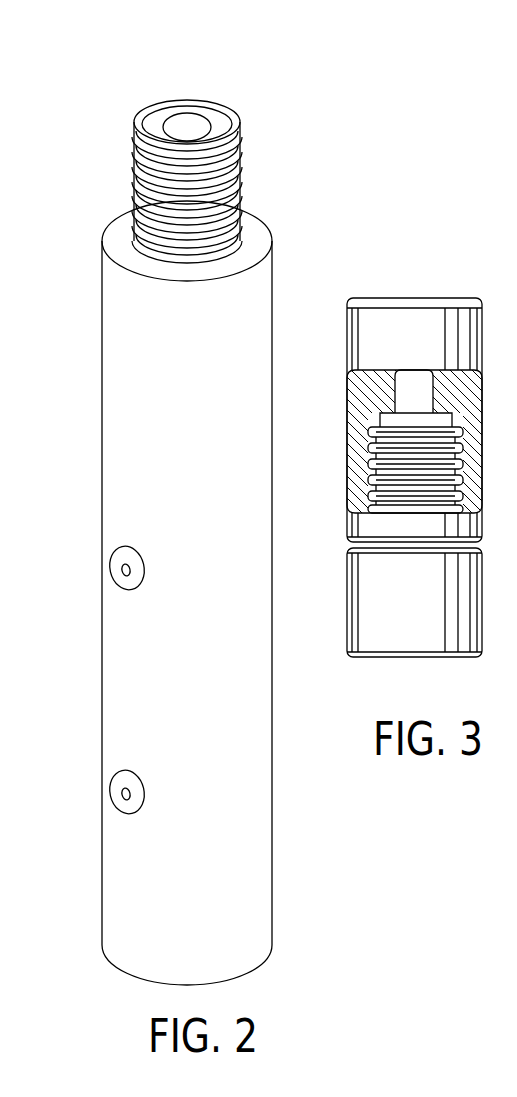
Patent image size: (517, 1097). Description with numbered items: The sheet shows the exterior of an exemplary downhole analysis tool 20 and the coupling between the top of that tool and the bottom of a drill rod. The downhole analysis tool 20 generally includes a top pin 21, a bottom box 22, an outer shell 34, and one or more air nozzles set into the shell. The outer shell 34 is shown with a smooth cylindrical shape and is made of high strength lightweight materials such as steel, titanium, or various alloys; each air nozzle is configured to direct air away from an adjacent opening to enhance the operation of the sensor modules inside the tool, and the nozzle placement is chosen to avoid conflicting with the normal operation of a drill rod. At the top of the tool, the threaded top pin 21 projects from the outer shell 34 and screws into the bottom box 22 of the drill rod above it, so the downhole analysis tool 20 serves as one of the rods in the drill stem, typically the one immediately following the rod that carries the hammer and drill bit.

In FIG. 2, the downhole analysis tool 20 is at (130, 80).
In FIG. 2, the top pin 21 is at (245, 180).
In FIG. 3, the top pin 21 is at (383, 465).
In FIG. 3, the bottom box 22 is at (370, 387).
In FIG. 2, the outer shell 34 is at (140, 862).